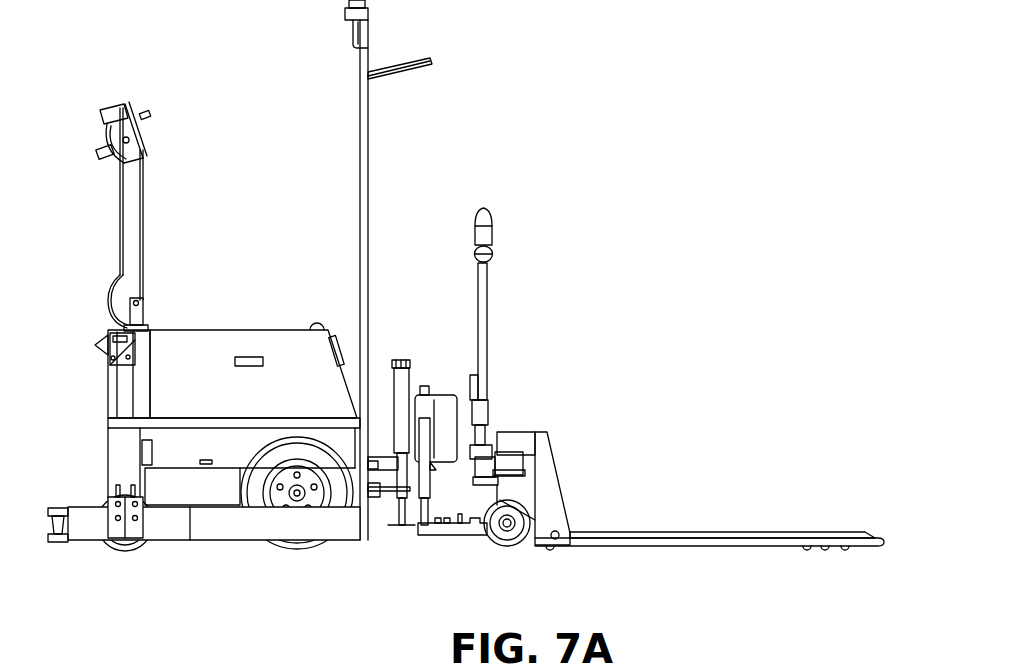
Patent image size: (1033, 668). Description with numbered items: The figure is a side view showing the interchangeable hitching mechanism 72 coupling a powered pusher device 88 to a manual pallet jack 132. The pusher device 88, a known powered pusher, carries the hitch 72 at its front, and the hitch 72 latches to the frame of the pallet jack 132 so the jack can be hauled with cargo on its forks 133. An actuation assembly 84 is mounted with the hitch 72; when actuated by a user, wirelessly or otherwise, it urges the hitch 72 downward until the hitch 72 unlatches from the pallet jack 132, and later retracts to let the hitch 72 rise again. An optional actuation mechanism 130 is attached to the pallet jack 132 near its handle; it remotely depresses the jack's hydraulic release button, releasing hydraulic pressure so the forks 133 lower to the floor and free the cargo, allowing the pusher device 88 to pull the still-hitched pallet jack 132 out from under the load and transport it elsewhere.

The powered pusher device 88 is at (60, 348).
The interchangeable hitching mechanism 72 is at (395, 570).
The actuation assembly 84 is at (443, 478).
The actuation mechanism 130 is at (445, 373).
The manual pallet jack 132 is at (650, 398).
The pallet jack forks 133 is at (753, 532).